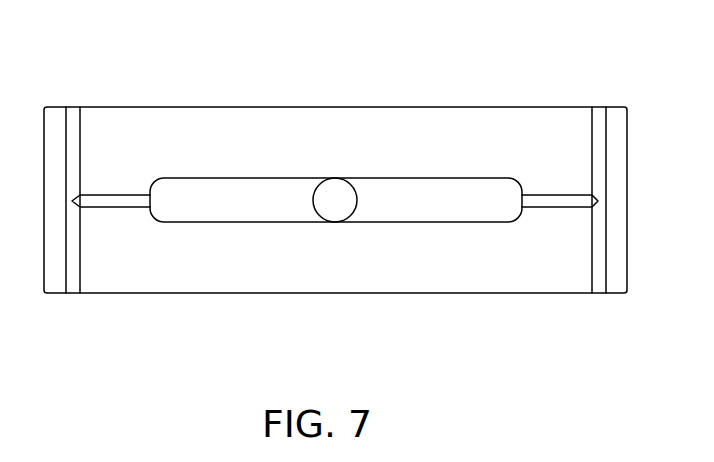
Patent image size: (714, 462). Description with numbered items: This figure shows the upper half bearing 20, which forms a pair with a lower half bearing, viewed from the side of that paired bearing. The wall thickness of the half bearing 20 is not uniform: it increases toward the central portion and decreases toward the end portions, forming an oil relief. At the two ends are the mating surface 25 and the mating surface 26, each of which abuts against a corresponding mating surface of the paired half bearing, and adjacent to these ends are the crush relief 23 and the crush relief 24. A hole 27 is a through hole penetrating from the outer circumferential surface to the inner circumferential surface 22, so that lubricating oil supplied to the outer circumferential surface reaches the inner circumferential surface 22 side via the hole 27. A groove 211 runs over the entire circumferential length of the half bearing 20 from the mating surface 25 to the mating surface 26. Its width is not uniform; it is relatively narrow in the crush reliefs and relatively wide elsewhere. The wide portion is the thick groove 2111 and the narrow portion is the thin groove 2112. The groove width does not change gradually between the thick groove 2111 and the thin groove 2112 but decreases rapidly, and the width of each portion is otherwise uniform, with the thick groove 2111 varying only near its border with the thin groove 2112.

The half bearing 20 is at (402, 88).
The inner circumferential surface 22 is at (365, 275).
The crush relief 23 is at (597, 285).
The crush relief 24 is at (73, 285).
The mating surface 25 is at (614, 108).
The mating surface 26 is at (55, 107).
The groove 211 is at (263, 63).
The thick groove 2111 is at (213, 178).
The thin groove 2112 is at (128, 195).
The hole 27 is at (340, 195).